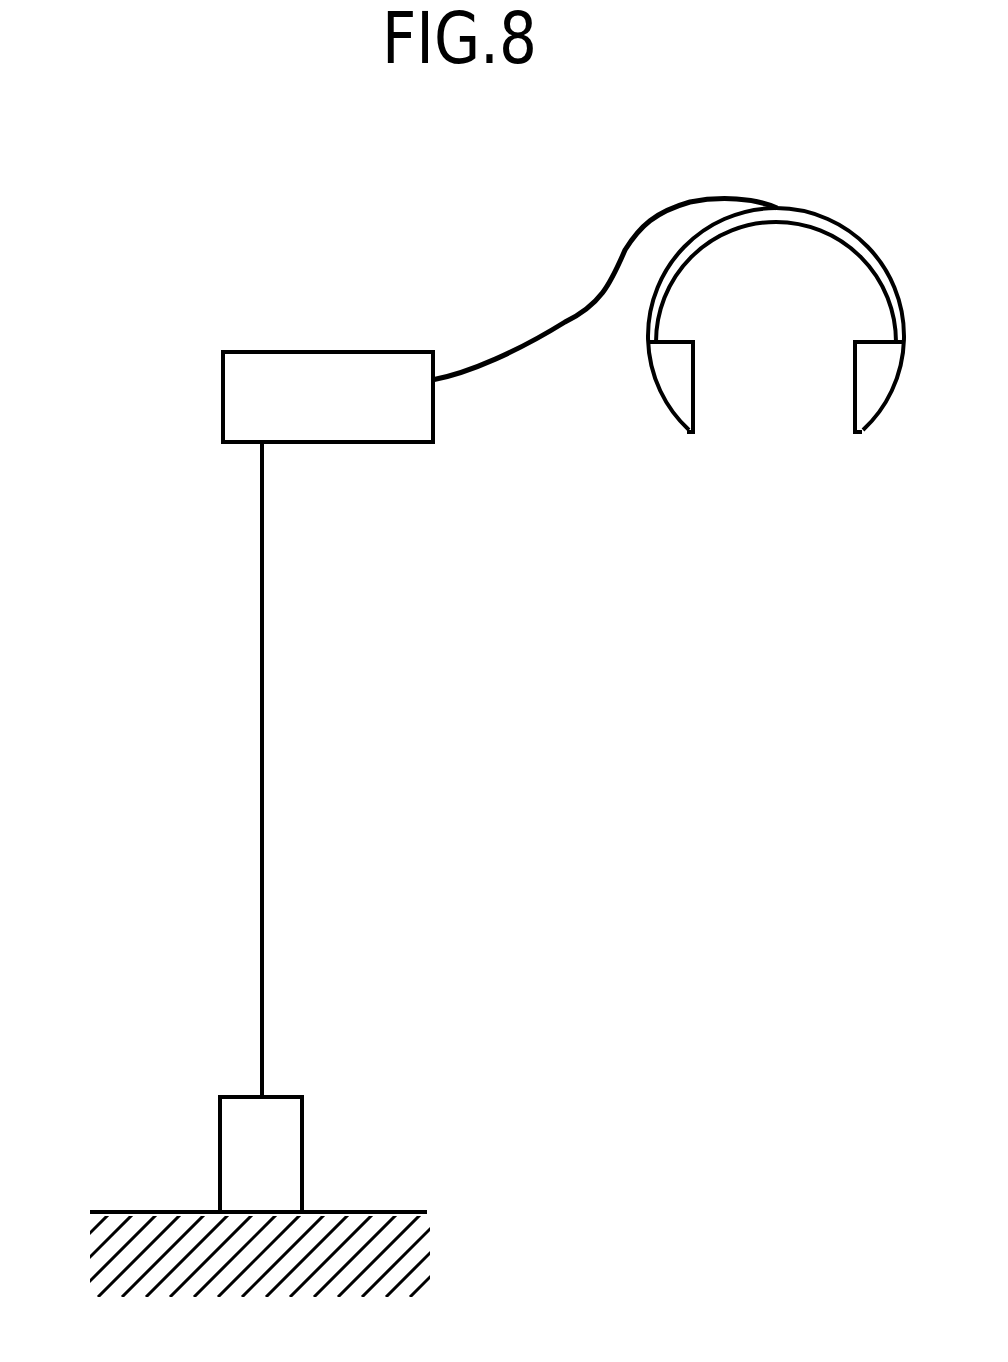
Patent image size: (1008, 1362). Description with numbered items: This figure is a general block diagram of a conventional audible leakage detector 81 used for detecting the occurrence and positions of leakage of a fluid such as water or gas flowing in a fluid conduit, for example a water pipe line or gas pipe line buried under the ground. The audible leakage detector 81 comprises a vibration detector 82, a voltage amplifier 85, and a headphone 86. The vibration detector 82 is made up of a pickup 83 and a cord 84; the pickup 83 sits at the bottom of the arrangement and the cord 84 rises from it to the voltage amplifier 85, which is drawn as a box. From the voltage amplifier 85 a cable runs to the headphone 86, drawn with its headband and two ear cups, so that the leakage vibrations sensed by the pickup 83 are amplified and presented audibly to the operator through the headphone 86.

The audible leakage detector 81 is at (141, 294).
The vibration detector 82 is at (378, 1010).
The pickup 83 is at (302, 1122).
The cord 84 is at (264, 822).
The voltage amplifier 85 is at (272, 351).
The headphone 86 is at (817, 212).